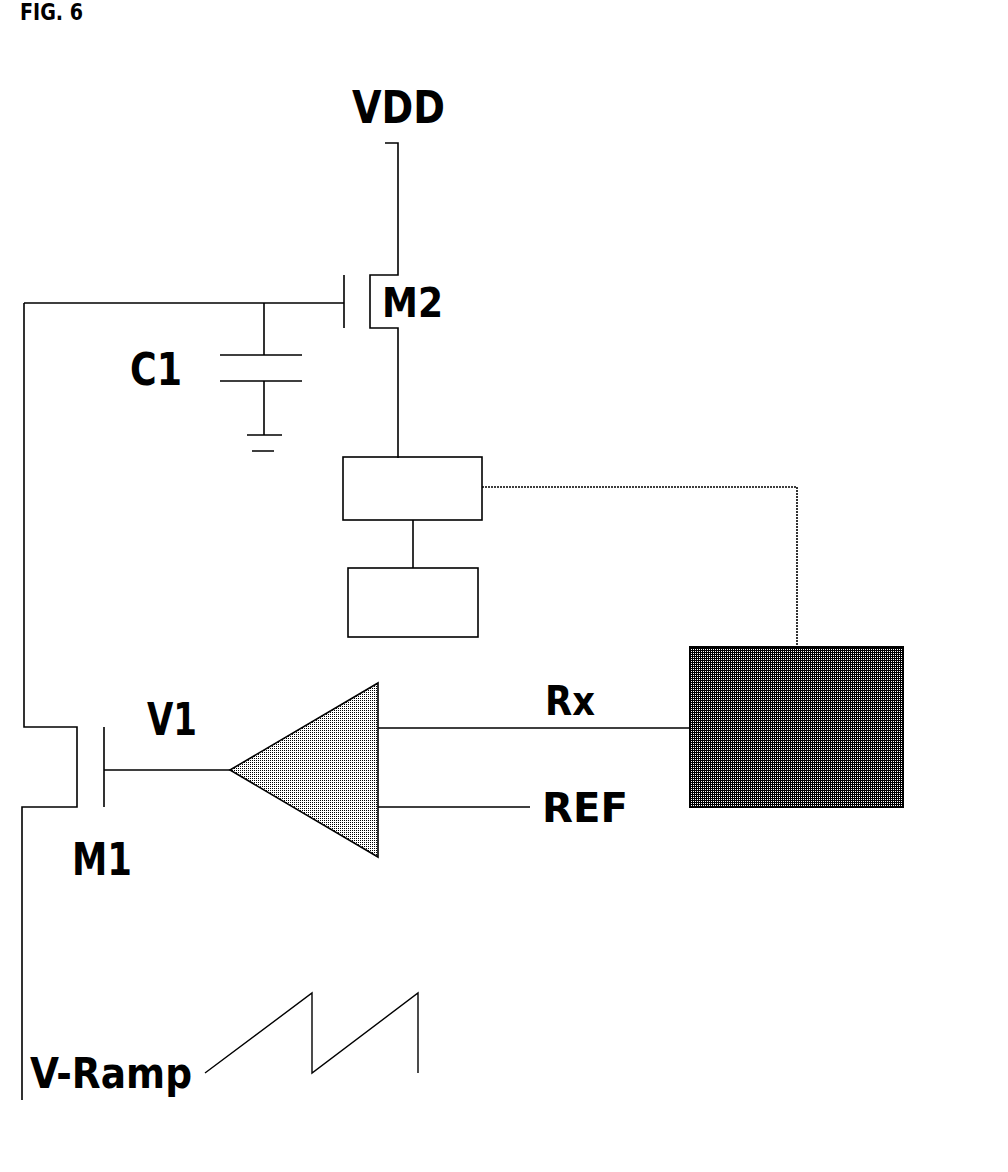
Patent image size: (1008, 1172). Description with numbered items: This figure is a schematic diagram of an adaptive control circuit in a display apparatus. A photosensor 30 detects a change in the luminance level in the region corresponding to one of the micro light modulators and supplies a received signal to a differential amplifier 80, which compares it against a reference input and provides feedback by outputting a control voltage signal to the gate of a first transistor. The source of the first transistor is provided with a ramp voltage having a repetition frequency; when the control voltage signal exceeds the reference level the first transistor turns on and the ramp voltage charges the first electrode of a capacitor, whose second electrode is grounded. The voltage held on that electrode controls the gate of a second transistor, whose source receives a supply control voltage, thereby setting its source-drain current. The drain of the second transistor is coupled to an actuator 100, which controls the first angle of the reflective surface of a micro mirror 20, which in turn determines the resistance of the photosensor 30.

The actuator 100 is at (412, 488).
The micro mirror 20 is at (413, 602).
The photosensor 30 is at (796, 727).
The differential amplifier 80 is at (304, 770).